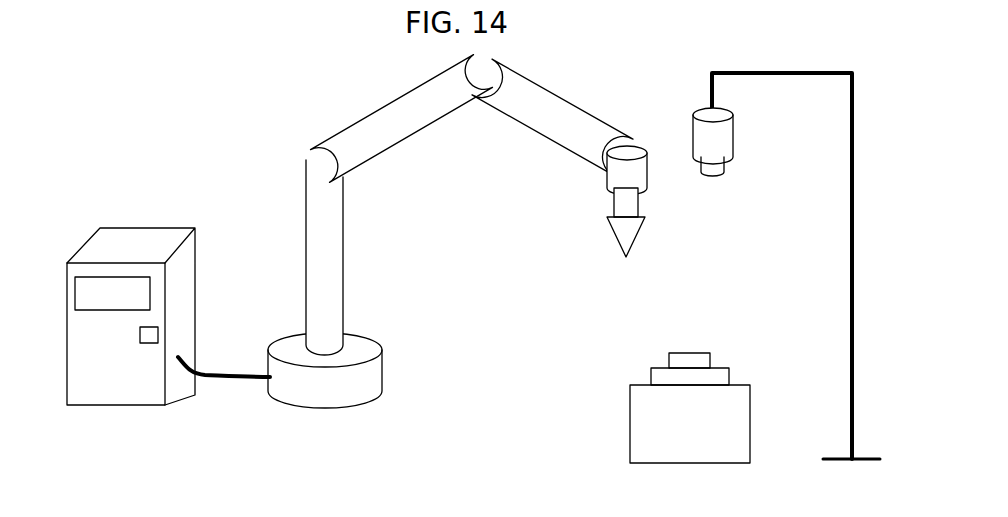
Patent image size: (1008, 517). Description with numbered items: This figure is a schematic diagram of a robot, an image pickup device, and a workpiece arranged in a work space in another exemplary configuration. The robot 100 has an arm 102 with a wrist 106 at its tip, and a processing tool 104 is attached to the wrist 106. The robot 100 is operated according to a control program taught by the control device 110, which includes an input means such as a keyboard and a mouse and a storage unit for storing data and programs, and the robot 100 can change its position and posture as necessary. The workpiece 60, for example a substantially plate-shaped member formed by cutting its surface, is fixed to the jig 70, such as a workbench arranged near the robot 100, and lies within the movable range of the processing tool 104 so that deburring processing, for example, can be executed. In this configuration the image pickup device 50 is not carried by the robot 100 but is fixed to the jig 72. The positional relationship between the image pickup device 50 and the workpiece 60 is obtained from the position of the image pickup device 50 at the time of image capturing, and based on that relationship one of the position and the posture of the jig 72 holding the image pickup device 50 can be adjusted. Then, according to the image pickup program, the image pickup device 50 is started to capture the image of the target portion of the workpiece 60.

The control device 110 is at (122, 235).
The robot 100 is at (445, 228).
The arm 102 is at (568, 122).
The wrist 106 is at (608, 178).
The processing tool 104 is at (617, 238).
The image pickup device 50 is at (693, 140).
The jig 72 is at (853, 255).
The jig 70 is at (630, 425).
The workpiece 60 is at (710, 363).